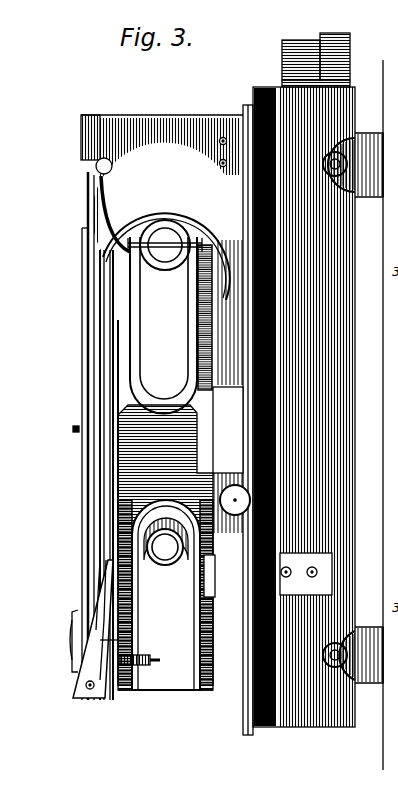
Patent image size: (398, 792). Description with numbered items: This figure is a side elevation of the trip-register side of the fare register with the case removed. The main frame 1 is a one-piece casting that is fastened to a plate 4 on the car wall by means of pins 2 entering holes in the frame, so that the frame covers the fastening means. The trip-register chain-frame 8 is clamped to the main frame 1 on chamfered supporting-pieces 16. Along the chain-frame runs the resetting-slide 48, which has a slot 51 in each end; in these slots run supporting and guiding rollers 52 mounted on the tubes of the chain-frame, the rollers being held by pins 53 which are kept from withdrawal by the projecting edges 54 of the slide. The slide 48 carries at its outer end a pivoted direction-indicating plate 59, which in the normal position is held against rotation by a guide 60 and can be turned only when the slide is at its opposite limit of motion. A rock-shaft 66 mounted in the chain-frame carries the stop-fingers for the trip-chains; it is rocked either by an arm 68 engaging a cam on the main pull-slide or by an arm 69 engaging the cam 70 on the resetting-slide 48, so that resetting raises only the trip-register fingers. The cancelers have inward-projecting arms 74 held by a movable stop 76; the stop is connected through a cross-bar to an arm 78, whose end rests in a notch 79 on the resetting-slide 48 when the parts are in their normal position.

The main frame 1 is at (272, 728).
The pins 2 is at (346, 142).
The plate 4 is at (368, 200).
The trip-register chain-frame 8 is at (108, 118).
The supporting-pieces 16 is at (248, 104).
The resetting-slide 48 is at (118, 457).
The slot 51 is at (148, 326).
The supporting and guiding rollers 52 is at (168, 270).
The pins 53 is at (186, 236).
The projecting edges 54 is at (204, 245).
The direction-indicating plate 59 is at (231, 460).
The guide 60 is at (215, 580).
The rock-shaft 66 is at (112, 167).
The arm 68 is at (306, 574).
The arm 69 is at (114, 222).
The cam 70 is at (126, 318).
The arms 74 is at (73, 611).
The movable stop 76 is at (71, 655).
The arm 78 is at (104, 592).
The notch 79 is at (118, 556).